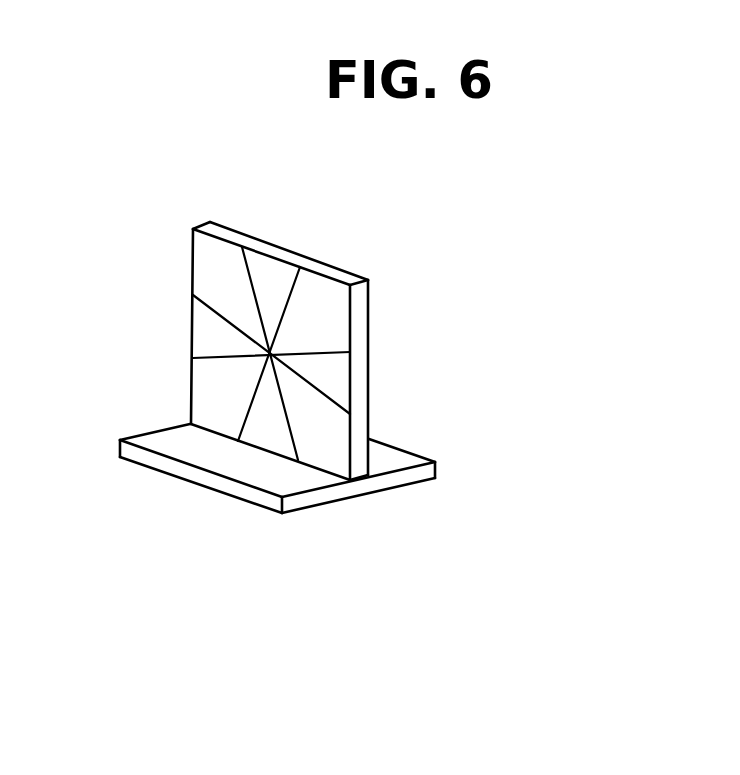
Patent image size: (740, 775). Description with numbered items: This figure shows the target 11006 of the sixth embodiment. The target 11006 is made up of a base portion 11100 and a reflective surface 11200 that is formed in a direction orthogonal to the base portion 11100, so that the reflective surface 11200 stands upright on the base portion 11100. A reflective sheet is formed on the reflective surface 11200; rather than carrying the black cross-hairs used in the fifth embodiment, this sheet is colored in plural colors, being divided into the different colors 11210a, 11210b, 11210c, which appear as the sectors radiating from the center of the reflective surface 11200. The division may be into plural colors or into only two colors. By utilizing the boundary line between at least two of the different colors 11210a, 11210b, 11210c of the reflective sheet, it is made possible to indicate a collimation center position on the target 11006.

The target 11006 is at (388, 653).
The base portion 11100 is at (410, 477).
The reflective surface 11200 is at (165, 292).
The color 11210a is at (422, 200).
The color 11210b is at (332, 324).
The color 11210c is at (528, 390).